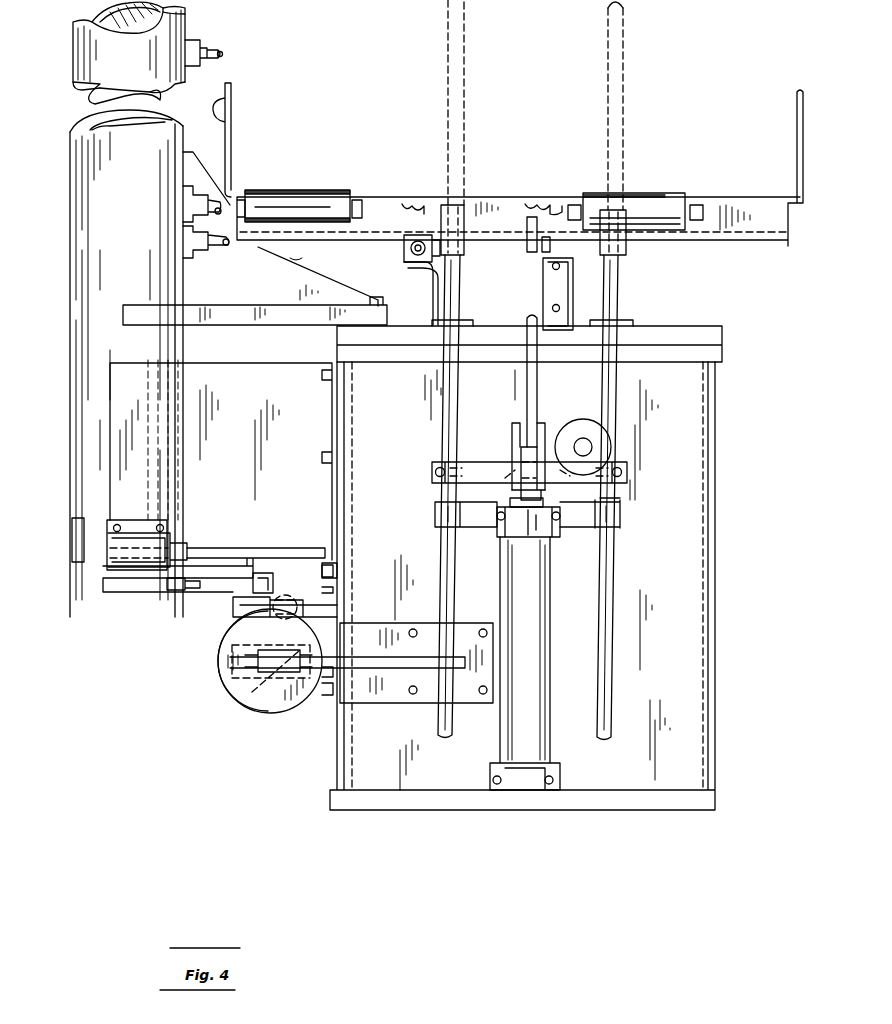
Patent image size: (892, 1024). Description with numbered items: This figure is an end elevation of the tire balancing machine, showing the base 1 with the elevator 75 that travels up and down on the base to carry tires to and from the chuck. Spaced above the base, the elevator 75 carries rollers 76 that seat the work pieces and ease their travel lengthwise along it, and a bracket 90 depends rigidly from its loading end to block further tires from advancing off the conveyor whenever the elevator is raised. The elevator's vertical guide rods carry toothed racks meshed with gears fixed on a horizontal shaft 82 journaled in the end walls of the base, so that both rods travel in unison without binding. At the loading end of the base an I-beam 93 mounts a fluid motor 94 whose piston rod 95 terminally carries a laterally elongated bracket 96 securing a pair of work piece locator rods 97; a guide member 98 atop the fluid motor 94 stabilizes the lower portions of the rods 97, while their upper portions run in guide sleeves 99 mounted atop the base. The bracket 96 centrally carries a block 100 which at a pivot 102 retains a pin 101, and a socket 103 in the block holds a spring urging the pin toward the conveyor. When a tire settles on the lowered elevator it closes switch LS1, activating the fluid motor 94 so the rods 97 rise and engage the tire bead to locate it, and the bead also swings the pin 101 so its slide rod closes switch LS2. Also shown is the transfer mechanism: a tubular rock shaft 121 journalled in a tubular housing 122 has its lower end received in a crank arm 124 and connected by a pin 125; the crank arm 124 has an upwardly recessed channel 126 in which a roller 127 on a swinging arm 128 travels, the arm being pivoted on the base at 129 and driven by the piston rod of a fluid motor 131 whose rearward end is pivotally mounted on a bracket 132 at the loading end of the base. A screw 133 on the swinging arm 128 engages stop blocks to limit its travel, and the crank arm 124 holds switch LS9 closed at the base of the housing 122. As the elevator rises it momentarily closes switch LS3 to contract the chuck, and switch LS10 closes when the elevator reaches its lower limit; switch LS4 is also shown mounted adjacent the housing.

The base 1 is at (718, 428).
The elevator 75 is at (715, 238).
The rollers 76 is at (675, 193).
The horizontal shaft 82 is at (592, 447).
The bracket 90 is at (555, 206).
The I-beam 93 is at (548, 640).
The fluid motor 94 is at (545, 684).
The piston rod 95 is at (545, 494).
The bracket 96 is at (478, 462).
The work piece locator rods 97 is at (458, 404).
The guide member 98 is at (436, 515).
The guide sleeves 99 is at (470, 205).
The block 100 is at (545, 430).
The pin 101 is at (530, 380).
The pivot 102 is at (512, 484).
The socket 103 is at (516, 432).
The tubular rock shaft 121 is at (90, 16).
The tubular housing 122 is at (73, 68).
The crank arm 124 is at (226, 557).
The pin 125 is at (72, 552).
The channel 126 is at (270, 576).
The roller 127 is at (275, 566).
The swinging arm 128 is at (233, 608).
The pivot 129 is at (322, 560).
The fluid motor 131 is at (226, 680).
The bracket 132 is at (332, 705).
The screw 133 is at (298, 616).
The switch LS1 is at (400, 253).
The switch LS2 is at (542, 258).
The switch LS3 is at (190, 192).
The limit switch LS4 is at (198, 40).
The switch LS9 is at (185, 595).
The switch LS10 is at (193, 252).